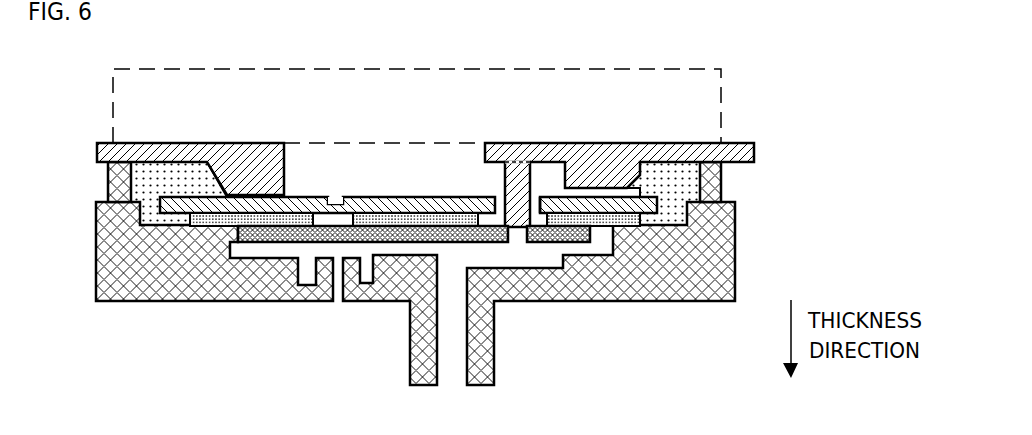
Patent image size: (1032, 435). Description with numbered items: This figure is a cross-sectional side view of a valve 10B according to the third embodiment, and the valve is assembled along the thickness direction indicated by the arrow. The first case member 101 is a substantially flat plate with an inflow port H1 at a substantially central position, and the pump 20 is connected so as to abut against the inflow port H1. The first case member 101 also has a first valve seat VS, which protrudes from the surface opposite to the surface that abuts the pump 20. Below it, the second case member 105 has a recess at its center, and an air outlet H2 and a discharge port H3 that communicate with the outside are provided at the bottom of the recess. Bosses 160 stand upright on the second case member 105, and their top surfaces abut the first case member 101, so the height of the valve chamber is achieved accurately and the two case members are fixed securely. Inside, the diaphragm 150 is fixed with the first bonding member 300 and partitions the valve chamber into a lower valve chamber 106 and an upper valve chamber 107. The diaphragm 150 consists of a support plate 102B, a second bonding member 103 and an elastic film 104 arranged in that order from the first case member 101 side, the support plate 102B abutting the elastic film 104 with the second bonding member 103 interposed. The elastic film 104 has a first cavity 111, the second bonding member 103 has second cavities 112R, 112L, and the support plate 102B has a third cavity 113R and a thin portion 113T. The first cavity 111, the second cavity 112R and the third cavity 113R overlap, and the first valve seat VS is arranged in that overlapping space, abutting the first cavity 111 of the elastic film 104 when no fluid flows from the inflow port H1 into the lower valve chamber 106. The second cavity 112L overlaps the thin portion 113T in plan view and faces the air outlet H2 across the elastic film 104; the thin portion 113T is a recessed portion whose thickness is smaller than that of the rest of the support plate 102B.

The valve 10B is at (865, 137).
The pump 20 is at (721, 92).
The first case member 101 is at (755, 153).
The boss 160 is at (118, 187).
The support plate 102B is at (650, 206).
The second bonding member 103 is at (640, 220).
The elastic film 104 is at (600, 237).
The second case member 105 is at (722, 282).
The diaphragm 150 is at (823, 193).
The first bonding member 300 is at (158, 178).
The thin portion 113T is at (332, 197).
The third cavity 113R is at (533, 200).
The second cavity 112L is at (326, 217).
The second cavity 112R is at (540, 218).
The first cavity 111 is at (520, 237).
The upper valve chamber 107 is at (500, 263).
The lower valve chamber 106 is at (445, 158).
The inflow port H1 is at (413, 143).
The air outlet H2 is at (339, 292).
The discharge port H3 is at (450, 365).
The first valve seat VS is at (517, 175).